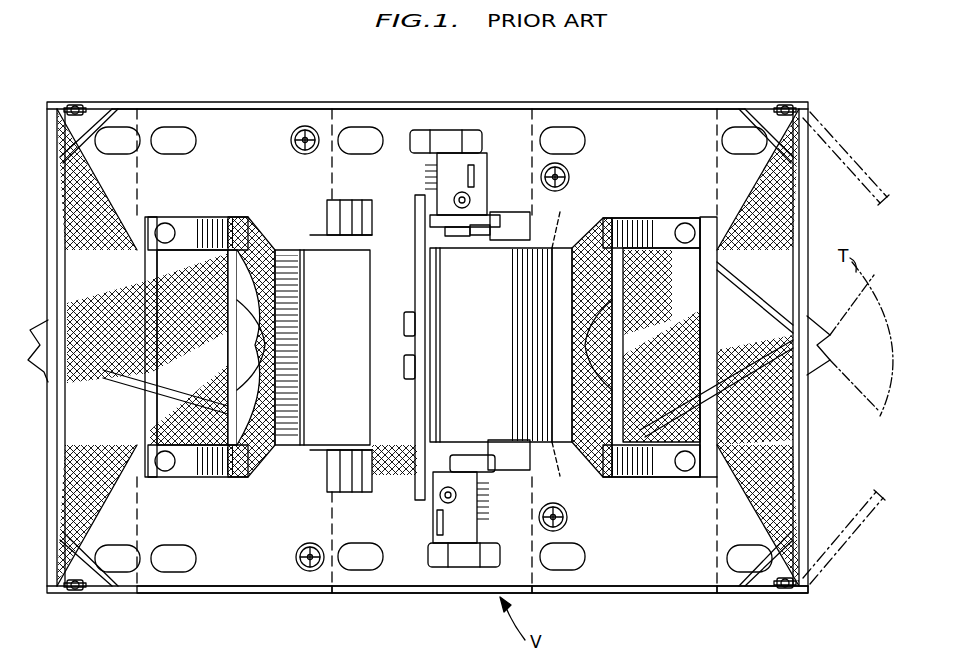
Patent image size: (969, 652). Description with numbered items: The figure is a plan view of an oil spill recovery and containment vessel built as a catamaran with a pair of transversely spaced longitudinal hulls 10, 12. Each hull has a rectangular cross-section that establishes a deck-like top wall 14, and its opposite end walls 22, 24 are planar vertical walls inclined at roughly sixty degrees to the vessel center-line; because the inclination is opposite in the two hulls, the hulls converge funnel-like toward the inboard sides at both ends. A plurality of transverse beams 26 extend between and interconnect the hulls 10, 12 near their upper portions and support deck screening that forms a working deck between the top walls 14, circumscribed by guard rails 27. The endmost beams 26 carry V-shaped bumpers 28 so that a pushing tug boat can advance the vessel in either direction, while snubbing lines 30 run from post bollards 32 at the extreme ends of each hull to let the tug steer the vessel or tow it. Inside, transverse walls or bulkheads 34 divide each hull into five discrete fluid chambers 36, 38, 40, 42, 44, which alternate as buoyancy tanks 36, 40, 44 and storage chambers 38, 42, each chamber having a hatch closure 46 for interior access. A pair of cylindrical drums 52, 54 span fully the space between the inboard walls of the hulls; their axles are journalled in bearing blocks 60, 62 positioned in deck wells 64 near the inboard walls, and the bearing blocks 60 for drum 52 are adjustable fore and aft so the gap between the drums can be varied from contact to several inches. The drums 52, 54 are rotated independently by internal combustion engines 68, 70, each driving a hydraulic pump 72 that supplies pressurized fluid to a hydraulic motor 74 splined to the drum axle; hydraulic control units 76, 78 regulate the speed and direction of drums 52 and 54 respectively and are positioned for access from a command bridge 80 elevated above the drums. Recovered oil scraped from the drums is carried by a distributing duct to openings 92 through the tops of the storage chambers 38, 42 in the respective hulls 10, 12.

The longitudinal hull 10 is at (633, 104).
The longitudinal hull 12 is at (612, 590).
The deck-like top wall 14 is at (642, 176).
The end wall 22 is at (95, 200).
The end wall 24 is at (760, 200).
The transverse beam 26 is at (140, 360).
The guard rail 27 is at (232, 104).
The V-shaped bumper 28 is at (45, 320).
The snubbing line 30 is at (833, 135).
The post bollard 32 is at (76, 104).
The transverse wall or bulkhead 34 is at (140, 115).
The fluid chamber (buoyancy tank) 36 is at (730, 592).
The storage chamber 38 is at (668, 590).
The fluid chamber (buoyancy tank) 40 is at (416, 588).
The storage chamber 42 is at (226, 590).
The fluid chamber (buoyancy tank) 44 is at (130, 590).
The hatch closure 46 is at (356, 145).
The cylindrical drum 52 is at (495, 356).
The cylindrical drum 54 is at (337, 356).
The bearing block 60 is at (506, 485).
The bearing block 62 is at (340, 240).
The deck well 64 is at (520, 222).
The internal combustion engine 68 is at (448, 128).
The internal combustion engine 70 is at (430, 535).
The hydraulic pump 72 is at (452, 230).
The hydraulic motor 74 is at (500, 220).
The hydraulic control unit 76 is at (407, 310).
The hydraulic control unit 78 is at (407, 380).
The command bridge 80 is at (378, 474).
The opening 92 is at (683, 228).